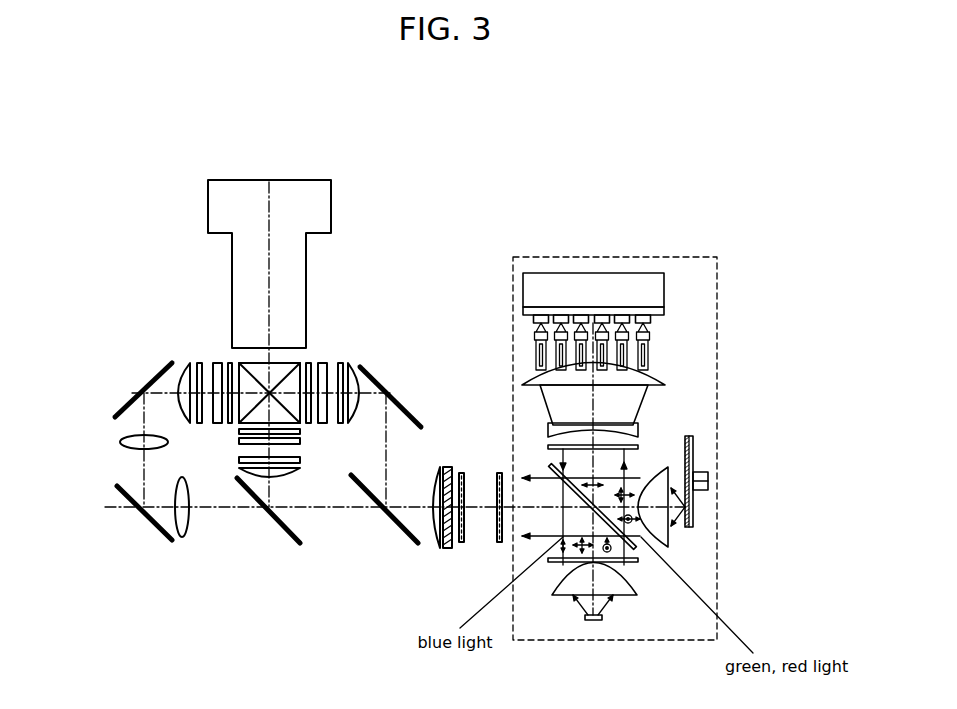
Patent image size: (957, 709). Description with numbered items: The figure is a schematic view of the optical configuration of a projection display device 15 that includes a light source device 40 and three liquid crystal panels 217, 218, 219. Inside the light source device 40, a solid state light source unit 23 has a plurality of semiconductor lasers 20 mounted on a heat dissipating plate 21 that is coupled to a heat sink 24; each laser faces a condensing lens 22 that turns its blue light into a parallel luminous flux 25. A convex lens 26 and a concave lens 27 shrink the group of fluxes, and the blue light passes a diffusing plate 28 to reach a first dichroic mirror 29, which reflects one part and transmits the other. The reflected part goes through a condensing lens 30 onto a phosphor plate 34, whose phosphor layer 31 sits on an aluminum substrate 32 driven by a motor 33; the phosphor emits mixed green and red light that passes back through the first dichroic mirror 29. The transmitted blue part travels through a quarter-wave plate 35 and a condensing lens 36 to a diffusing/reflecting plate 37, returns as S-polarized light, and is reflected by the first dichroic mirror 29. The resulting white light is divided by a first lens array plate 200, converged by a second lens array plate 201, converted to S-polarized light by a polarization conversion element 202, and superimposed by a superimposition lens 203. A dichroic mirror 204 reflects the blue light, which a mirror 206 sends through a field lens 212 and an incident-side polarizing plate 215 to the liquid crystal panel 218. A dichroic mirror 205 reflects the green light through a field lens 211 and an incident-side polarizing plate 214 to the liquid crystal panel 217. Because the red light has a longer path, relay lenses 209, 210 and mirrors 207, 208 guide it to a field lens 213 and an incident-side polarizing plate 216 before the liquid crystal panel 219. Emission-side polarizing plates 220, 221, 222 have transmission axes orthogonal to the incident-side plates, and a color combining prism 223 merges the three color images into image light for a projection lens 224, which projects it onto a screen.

The projection display device 15 is at (413, 146).
The semiconductor laser 20 is at (653, 322).
The heat dissipating plate 21 is at (665, 313).
The condensing lens 22 is at (646, 358).
The solid state light source unit 23 is at (668, 308).
The heat sink 24 is at (653, 270).
The parallel luminous flux 25 is at (535, 355).
The convex lens 26 is at (528, 378).
The concave lens 27 is at (550, 430).
The diffusing plate 28 is at (550, 447).
The first dichroic mirror 29 is at (550, 468).
The condensing lens 30 is at (660, 463).
The phosphor layer 31 is at (692, 528).
The aluminum substrate 32 is at (695, 510).
The motor 33 is at (728, 506).
The phosphor plate 34 is at (723, 510).
The quarter-wave plate 35 is at (635, 550).
The condensing lens 36 is at (630, 596).
The diffusing/reflecting plate 37 is at (585, 618).
The light source device 40 is at (597, 641).
The first lens array plate 200 is at (499, 543).
The second lens array plate 201 is at (461, 543).
The polarization conversion element 202 is at (452, 548).
The superimposition lens 203 is at (435, 548).
The dichroic mirror 204 is at (393, 513).
The dichroic mirror 205 is at (287, 532).
The mirror 206 is at (373, 376).
The mirror 207 is at (147, 513).
The mirror 208 is at (144, 393).
The relay lens 209 is at (188, 527).
The relay lens 210 is at (120, 443).
The field lens 211 is at (282, 478).
The field lens 212 is at (360, 412).
The field lens 213 is at (178, 362).
The incident-side polarizing plate 214 is at (300, 460).
The incident-side polarizing plate 215 is at (341, 364).
The incident-side polarizing plate 216 is at (193, 360).
The liquid crystal panel 217 is at (239, 442).
The liquid crystal panel 218 is at (321, 363).
The liquid crystal panel 219 is at (213, 360).
The emission-side polarizing plate 220 is at (239, 432).
The emission-side polarizing plate 221 is at (310, 425).
The emission-side polarizing plate 222 is at (230, 360).
The color combining prism 223 is at (300, 363).
The projection lens 224 is at (208, 232).